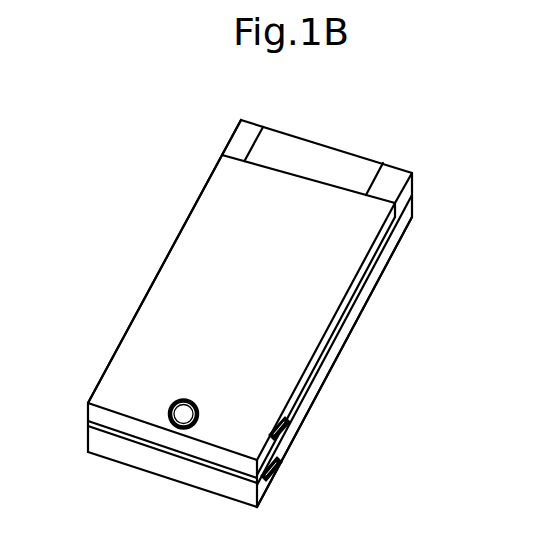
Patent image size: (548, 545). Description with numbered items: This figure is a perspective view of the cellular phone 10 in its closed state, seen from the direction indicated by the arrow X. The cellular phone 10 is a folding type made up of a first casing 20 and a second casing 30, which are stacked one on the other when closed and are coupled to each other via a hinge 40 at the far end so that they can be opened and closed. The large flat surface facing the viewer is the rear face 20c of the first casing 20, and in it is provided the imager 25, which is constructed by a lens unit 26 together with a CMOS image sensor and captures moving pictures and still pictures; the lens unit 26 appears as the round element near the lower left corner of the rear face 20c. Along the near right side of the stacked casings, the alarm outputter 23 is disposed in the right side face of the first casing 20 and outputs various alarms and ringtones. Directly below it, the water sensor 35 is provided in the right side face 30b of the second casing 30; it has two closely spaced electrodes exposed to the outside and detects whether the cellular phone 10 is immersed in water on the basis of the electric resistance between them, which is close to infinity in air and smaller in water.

The cellular phone 10 is at (150, 150).
The first casing 20 is at (178, 230).
The rear face 20c is at (162, 302).
The alarm outputter 23 is at (290, 423).
The imager 25 is at (170, 407).
The lens unit 26 is at (178, 405).
The second casing 30 is at (372, 298).
The right side face 30b is at (391, 258).
The water sensor 35 is at (283, 463).
The hinge 40 is at (343, 158).
The viewing direction X is at (292, 478).